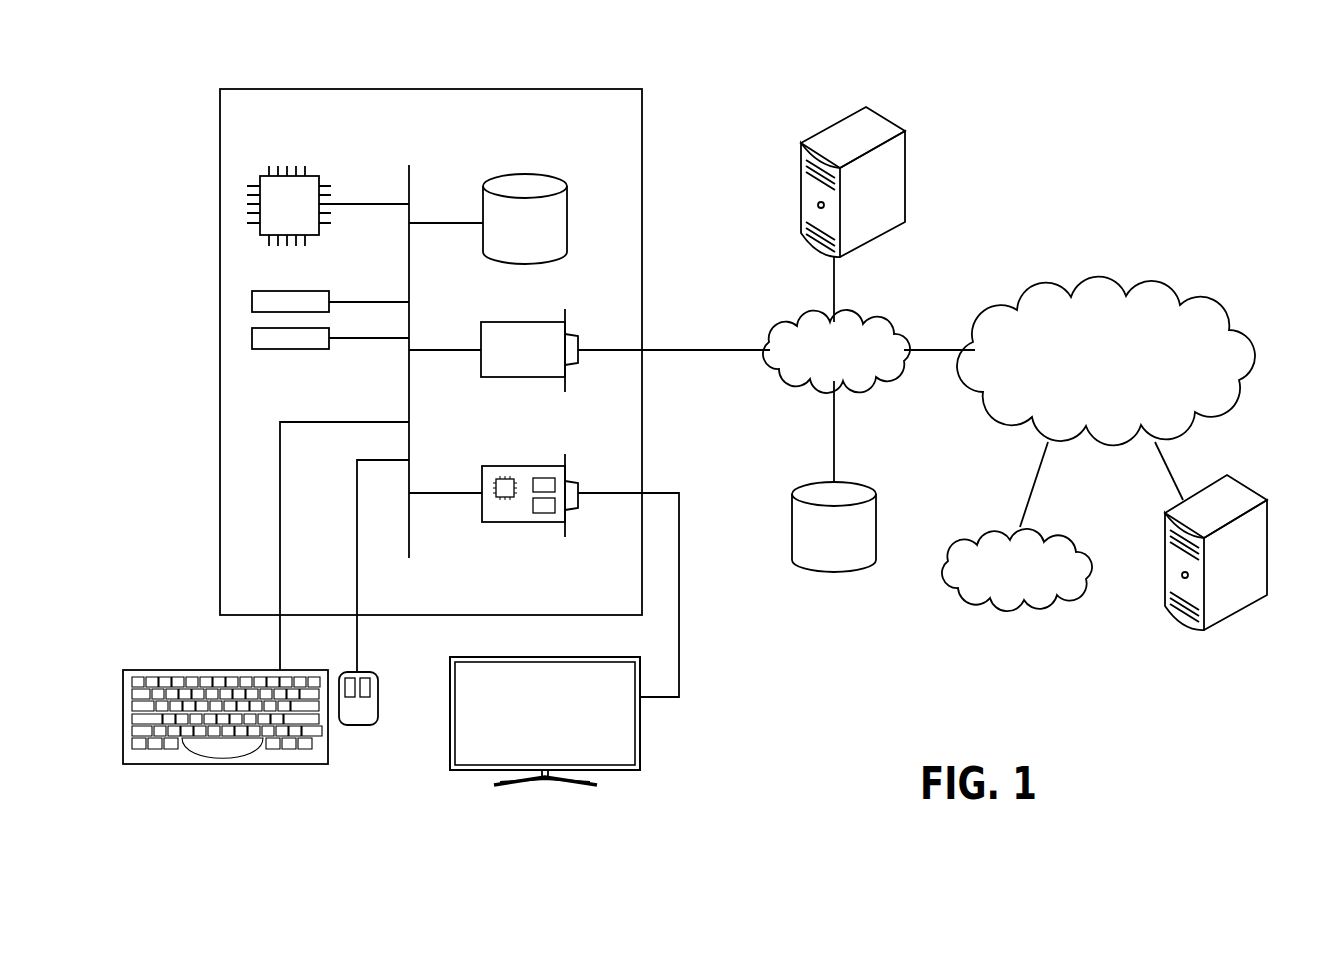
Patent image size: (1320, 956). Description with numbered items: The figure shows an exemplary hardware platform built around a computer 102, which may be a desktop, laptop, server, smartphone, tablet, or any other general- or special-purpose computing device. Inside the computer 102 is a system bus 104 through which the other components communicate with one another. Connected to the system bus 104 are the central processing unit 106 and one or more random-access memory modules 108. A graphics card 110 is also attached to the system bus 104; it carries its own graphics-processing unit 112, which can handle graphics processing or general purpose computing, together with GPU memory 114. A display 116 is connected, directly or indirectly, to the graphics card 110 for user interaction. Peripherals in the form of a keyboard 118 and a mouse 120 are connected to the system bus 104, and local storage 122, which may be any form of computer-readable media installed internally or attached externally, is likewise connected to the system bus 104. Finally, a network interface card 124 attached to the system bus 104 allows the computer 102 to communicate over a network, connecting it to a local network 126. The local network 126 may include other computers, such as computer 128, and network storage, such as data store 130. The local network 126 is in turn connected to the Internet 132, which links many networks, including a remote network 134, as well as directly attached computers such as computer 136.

The computer 102 is at (596, 88).
The system bus 104 is at (410, 175).
The central processing unit 106 is at (312, 174).
The random-access memory modules 108 is at (330, 338).
The graphics card 110 is at (544, 559).
The graphics-processing unit 112 is at (505, 498).
The GPU memory 114 is at (541, 514).
The display 116 is at (641, 750).
The keyboard 118 is at (229, 765).
The mouse 120 is at (357, 726).
The local storage 122 is at (570, 206).
The network interface card 124 is at (481, 330).
The local network 126 is at (893, 309).
The computer 128 is at (893, 122).
The data store 130 is at (868, 485).
The Internet 132 is at (1152, 272).
The remote network 134 is at (1075, 531).
The computer 136 is at (1247, 487).